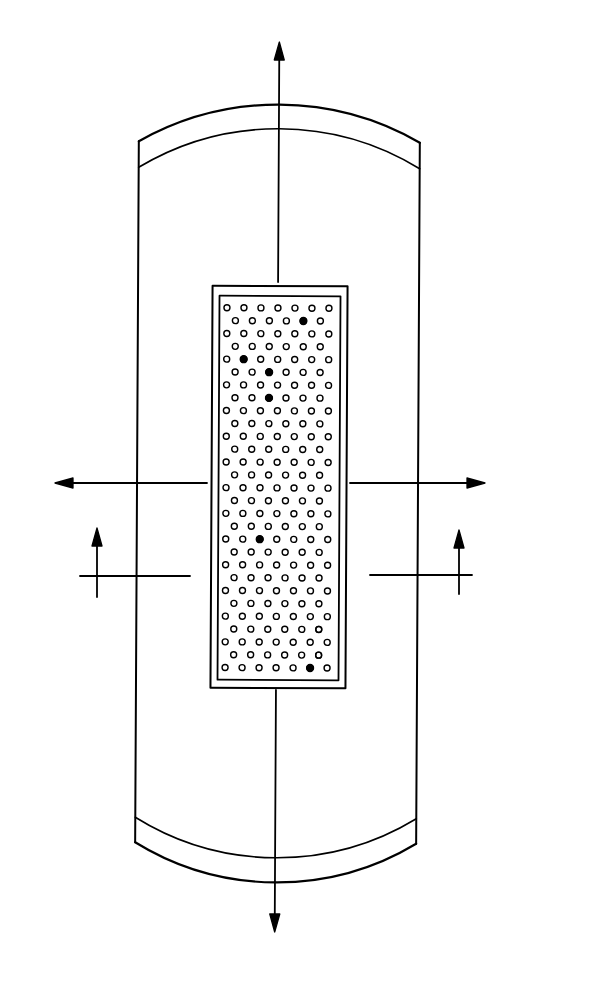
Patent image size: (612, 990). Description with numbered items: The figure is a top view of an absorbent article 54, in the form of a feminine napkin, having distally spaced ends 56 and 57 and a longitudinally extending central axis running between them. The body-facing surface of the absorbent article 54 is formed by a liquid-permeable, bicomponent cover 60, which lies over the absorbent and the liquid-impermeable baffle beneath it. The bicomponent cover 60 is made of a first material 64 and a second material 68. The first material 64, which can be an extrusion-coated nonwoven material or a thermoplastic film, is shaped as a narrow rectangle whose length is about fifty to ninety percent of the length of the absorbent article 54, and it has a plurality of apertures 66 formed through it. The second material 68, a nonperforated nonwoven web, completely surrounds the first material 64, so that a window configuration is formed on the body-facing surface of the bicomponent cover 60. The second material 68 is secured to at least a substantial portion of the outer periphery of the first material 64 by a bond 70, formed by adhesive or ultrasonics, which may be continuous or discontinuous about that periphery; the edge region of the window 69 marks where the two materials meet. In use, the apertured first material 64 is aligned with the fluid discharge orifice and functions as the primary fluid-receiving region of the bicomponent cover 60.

The absorbent article 54 is at (502, 163).
The end 56 is at (370, 144).
The end 57 is at (370, 848).
The bicomponent cover 60 is at (172, 733).
The first material 64 is at (334, 393).
The apertures 66 is at (322, 629).
The second material 68 is at (395, 263).
The frame 69 is at (234, 300).
The bond 70 is at (343, 306).